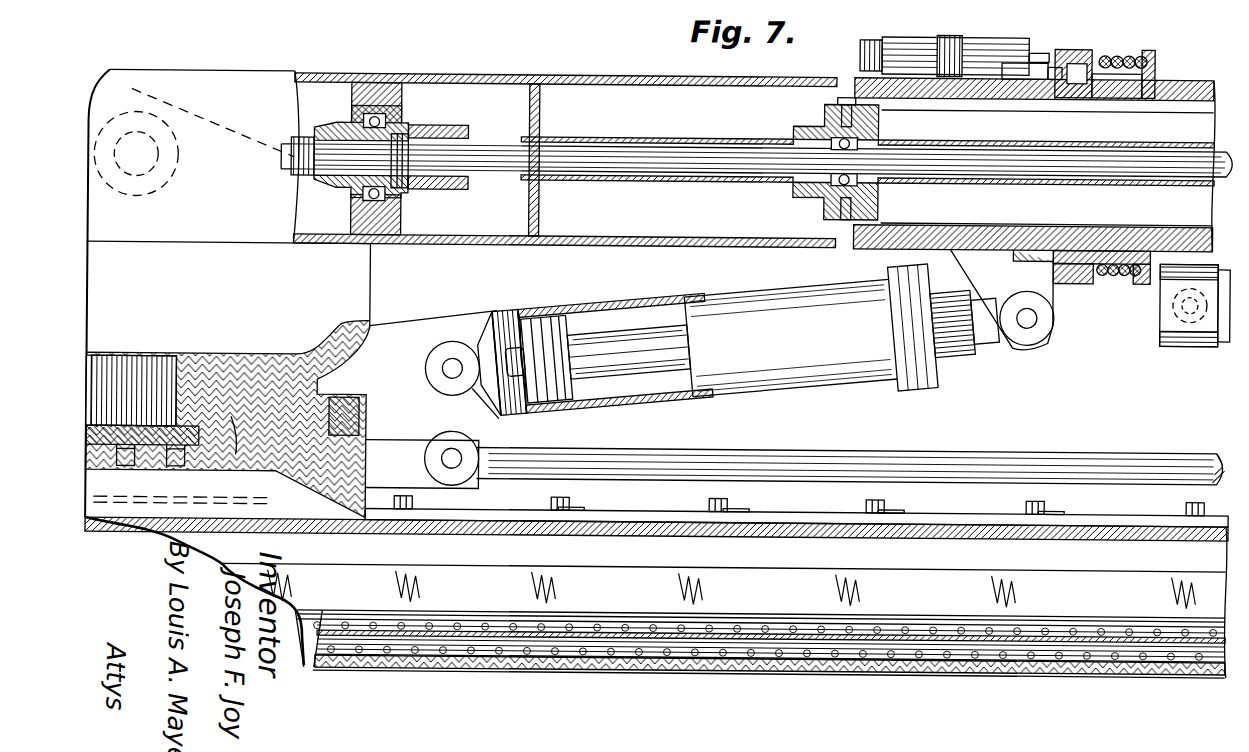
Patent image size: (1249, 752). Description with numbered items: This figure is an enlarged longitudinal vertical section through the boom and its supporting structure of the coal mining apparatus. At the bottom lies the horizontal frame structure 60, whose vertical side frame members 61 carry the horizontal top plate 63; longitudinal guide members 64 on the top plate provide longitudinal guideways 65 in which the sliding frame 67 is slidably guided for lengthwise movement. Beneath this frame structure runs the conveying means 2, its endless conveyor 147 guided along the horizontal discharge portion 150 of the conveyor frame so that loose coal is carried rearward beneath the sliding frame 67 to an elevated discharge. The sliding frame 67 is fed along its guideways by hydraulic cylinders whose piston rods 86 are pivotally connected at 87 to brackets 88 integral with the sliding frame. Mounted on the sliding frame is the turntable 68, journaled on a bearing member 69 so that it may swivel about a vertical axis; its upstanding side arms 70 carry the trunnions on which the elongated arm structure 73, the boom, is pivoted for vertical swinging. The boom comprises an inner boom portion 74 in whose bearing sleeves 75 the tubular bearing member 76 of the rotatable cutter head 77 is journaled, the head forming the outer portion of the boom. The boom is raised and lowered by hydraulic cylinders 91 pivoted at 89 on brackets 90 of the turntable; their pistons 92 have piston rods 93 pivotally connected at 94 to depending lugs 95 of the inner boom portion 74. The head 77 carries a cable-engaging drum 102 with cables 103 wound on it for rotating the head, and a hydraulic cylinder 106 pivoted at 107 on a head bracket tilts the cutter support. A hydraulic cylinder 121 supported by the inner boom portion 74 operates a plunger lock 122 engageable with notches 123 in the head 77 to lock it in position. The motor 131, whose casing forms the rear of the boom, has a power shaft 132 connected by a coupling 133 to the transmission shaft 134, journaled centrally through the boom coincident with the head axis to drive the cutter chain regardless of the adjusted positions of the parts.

The conveying means 2 is at (490, 672).
The horizontal frame structure 60 is at (830, 525).
The horizontal side frame members 61 is at (517, 537).
The horizontal top plate 63 is at (688, 528).
The longitudinal guide members 64 is at (670, 508).
The longitudinal guideways 65 is at (765, 520).
The sliding frame 67 is at (298, 488).
The turntable 68 is at (238, 462).
The bearing member 69 is at (130, 367).
The upstanding side arms 70 is at (354, 272).
The arm structure 73 is at (236, 74).
The inner boom portion 74 is at (576, 76).
The bearing sleeves 75 is at (872, 92).
The tubular bearing member 76 is at (983, 100).
The cutter head 77 is at (1187, 107).
The piston rods 86 is at (993, 463).
The pivotal connection 87 is at (453, 452).
The brackets 88 is at (408, 457).
The pivotal mounting 89 is at (453, 360).
The brackets 90 is at (400, 347).
The hydraulic cylinders 91 is at (842, 323).
The pistons 92 is at (593, 340).
The piston rods 93 is at (626, 324).
The pivotal connection 94 is at (1030, 320).
The depending lugs 95 is at (1043, 280).
The cable-engaging drum 102 is at (1132, 273).
The cables 103 is at (1112, 272).
The hydraulic cylinder 106 is at (1226, 340).
The pivotal mounting 107 is at (1188, 305).
The hydraulic cylinder 121 is at (926, 48).
The plunger lock 122 is at (1078, 85).
The notches 123 is at (1107, 88).
The motor 131 is at (320, 76).
The power shaft 132 is at (320, 138).
The coupling 133 is at (442, 142).
The transmission shaft 134 is at (612, 137).
The endless conveyor 147 is at (730, 657).
The horizontal discharge portion 150 is at (327, 617).